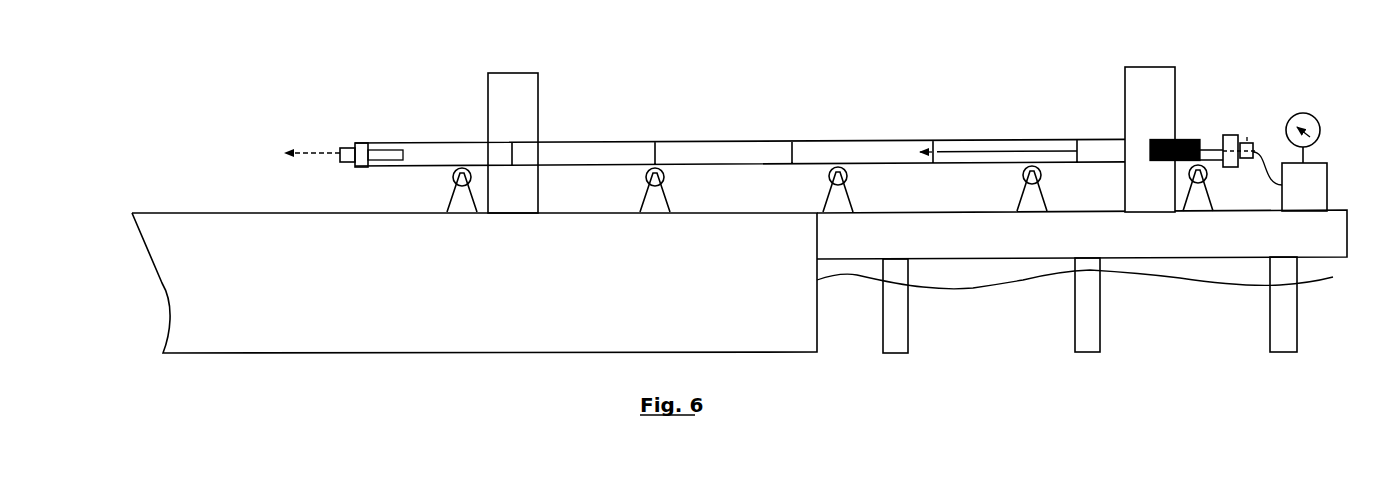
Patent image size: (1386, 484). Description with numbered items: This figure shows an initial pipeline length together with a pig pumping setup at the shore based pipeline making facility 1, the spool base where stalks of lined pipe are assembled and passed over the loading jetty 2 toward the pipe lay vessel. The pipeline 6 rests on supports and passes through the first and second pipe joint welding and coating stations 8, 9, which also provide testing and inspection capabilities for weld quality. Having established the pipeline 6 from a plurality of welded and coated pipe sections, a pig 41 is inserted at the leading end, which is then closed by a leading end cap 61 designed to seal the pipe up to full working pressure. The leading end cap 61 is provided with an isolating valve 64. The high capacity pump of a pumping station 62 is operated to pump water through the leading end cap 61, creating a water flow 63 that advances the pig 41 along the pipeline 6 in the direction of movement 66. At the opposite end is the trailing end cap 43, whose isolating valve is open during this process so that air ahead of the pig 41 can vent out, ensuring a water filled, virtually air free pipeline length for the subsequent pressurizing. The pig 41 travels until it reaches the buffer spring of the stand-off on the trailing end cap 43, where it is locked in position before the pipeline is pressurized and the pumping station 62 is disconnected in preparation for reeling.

The shore based pipeline making facility 1 is at (218, 224).
The loading jetty 2 is at (1005, 237).
The pipeline 6 is at (847, 137).
The first pipe joint welding and coating station 8 is at (527, 93).
The second pipe joint welding and coating station 9 is at (1148, 90).
The pig 41 is at (1183, 134).
The trailing end cap 43 is at (364, 136).
The leading end cap 61 is at (1234, 133).
The pumping station 62 is at (1303, 187).
The water flow 63 is at (1215, 150).
The isolating valve 64 is at (1250, 133).
The direction of movement 66 is at (970, 147).